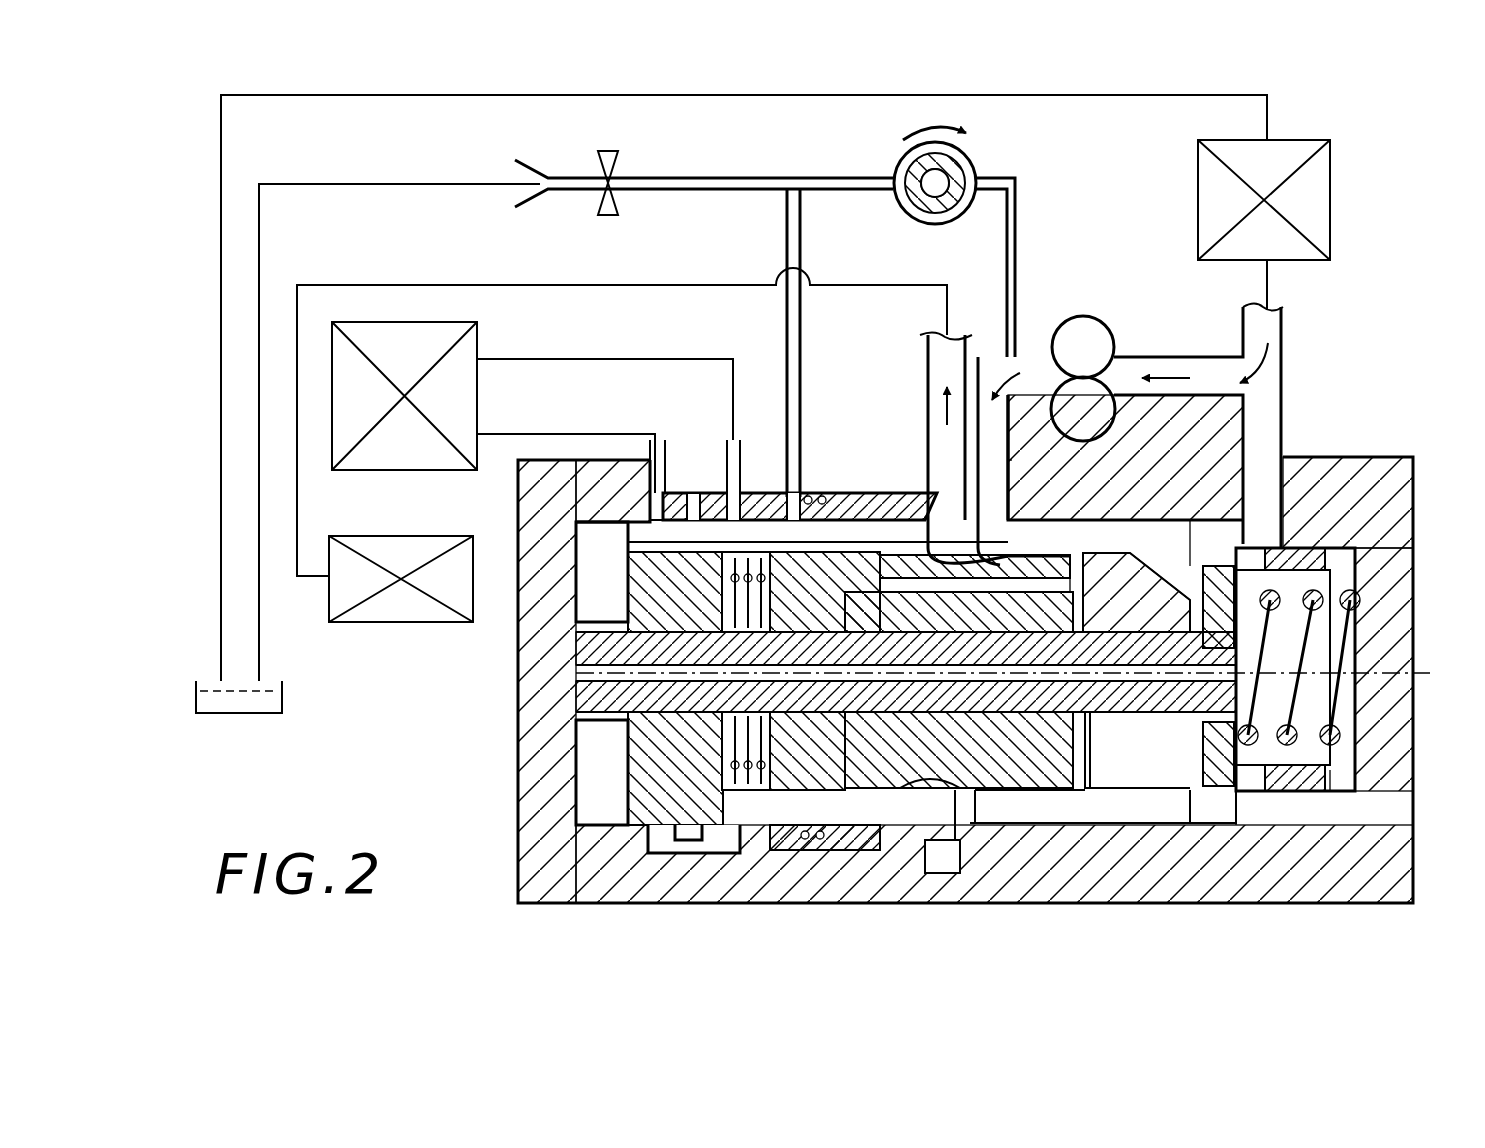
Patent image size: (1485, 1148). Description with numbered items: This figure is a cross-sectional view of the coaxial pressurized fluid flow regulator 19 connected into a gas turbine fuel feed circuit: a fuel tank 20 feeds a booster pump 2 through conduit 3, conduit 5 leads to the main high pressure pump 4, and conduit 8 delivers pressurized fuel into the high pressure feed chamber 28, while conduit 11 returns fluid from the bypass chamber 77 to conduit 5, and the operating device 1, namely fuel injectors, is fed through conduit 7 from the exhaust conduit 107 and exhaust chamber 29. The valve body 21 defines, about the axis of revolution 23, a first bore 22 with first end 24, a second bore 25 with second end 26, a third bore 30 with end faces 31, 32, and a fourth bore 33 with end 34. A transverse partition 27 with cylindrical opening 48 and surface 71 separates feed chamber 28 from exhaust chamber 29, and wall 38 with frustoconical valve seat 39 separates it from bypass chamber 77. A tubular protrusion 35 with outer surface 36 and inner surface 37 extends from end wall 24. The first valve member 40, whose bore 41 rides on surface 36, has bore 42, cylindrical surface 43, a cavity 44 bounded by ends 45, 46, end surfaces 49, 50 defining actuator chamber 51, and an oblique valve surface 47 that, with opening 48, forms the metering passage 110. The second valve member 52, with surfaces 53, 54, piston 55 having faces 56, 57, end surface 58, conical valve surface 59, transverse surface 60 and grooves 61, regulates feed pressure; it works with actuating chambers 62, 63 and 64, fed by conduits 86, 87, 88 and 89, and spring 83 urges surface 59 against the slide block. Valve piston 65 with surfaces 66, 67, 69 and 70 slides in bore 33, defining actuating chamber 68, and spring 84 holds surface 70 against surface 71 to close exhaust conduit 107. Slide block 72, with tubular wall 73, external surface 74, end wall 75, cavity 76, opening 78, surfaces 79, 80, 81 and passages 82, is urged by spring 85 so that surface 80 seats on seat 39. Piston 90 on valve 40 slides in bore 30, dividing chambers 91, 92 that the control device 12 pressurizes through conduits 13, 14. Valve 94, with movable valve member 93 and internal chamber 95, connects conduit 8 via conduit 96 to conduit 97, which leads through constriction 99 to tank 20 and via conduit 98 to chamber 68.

The operating device 1 is at (406, 556).
The booster pump 2 is at (1215, 195).
The suction inlet conduit 3 is at (1152, 92).
The main high pressure pump 4 is at (1095, 330).
The conduit 5 is at (1220, 357).
The conduit 7 is at (668, 285).
The conduit 8 is at (1005, 441).
The conduit 11 is at (1283, 406).
The hydromechanical or electronic control device 12 is at (468, 345).
The connection means 13 is at (598, 434).
The connection means 14 is at (615, 359).
The coaxial pressurized fluid flow regulator 19 is at (498, 716).
The fuel tank 20 is at (284, 714).
The valve body 21 is at (1292, 878).
The first bore 22 is at (632, 828).
The axis of revolution 23 is at (1379, 660).
The first end 24 is at (592, 668).
The second bore 25 is at (1336, 792).
The second end 26 is at (1347, 777).
The transverse partition 27 is at (978, 808).
The high pressure feed chamber 28 is at (1099, 537).
The exhaust chamber 29 is at (1012, 476).
The third bore 30 is at (672, 856).
The end face 31 is at (656, 440).
The end face 32 is at (691, 482).
The fourth bore 33 is at (872, 852).
The end 34 is at (800, 856).
The tubular protrusion 35 is at (602, 772).
The outer cylindrical surface 36 is at (632, 752).
The inner cylindrical surface 37 is at (670, 652).
The wall 38 is at (1166, 826).
The frustoconical valve seat 39 is at (1238, 826).
The first valve member 40 is at (1044, 750).
The cylindrical bore 41 is at (691, 714).
The cylindrical bore 42 is at (935, 701).
The cylindrical surface 43 is at (638, 830).
The cavity 44 is at (845, 772).
The end 45 is at (697, 768).
The end 46 is at (850, 745).
The valve surface 47 is at (1013, 557).
The cylindrical opening 48 is at (946, 786).
The transverse end surface 49 is at (624, 580).
The transverse end surface 50 is at (1095, 746).
The actuator chamber 51 is at (518, 806).
The second valve member 52 is at (1120, 642).
The cylindrical surface 53 is at (686, 630).
The cylindrical surface 54 is at (959, 609).
The piston 55 is at (778, 746).
The face 56 is at (906, 672).
The face 57 is at (820, 652).
The transverse end surface 58 is at (660, 716).
The conical valve surface 59 is at (1166, 576).
The transverse surface 60 is at (1080, 630).
The radially extending grooves 61 is at (1107, 592).
The actuating chamber 62 is at (600, 703).
The actuating chamber 63 is at (720, 568).
The actuating chamber 64 is at (845, 612).
The valve piston 65 is at (912, 484).
The surface 66 is at (880, 524).
The external axial surface 67 is at (868, 486).
The actuating chamber 68 is at (805, 492).
The transverse surface 69 is at (822, 452).
The transverse surface 70 is at (975, 846).
The surface 71 is at (940, 874).
The slide block 72 is at (1145, 807).
The tubular wall 73 is at (1355, 561).
The external cylindrical surface 74 is at (1301, 545).
The transverse end wall 75 is at (1181, 746).
The cavity 76 is at (1331, 548).
The bypass chamber 77 is at (1222, 560).
The opening 78 is at (1215, 722).
The frusto-conical surface 79 is at (1206, 624).
The frusto-conical surface 80 is at (1218, 816).
The valve surface 81 is at (1126, 600).
The passages 82 is at (1208, 560).
The spring 83 is at (775, 583).
The spring 84 is at (828, 856).
The spring 85 is at (1300, 791).
The conduit 86 is at (959, 612).
The conduit 87 is at (791, 590).
The conduit 88 is at (930, 770).
The conduit 89 is at (1071, 670).
The piston 90 is at (713, 811).
The chamber 91 is at (645, 512).
The chamber 92 is at (740, 480).
The movable valve member 93 is at (970, 176).
The valve 94 is at (962, 152).
The internal valve chamber 95 is at (935, 224).
The conduit 96 is at (1016, 252).
The conduit 97 is at (413, 184).
The conduit 98 is at (801, 248).
The constriction 99 is at (615, 170).
The exhaust conduit 107 is at (930, 400).
The passage 110 is at (959, 614).